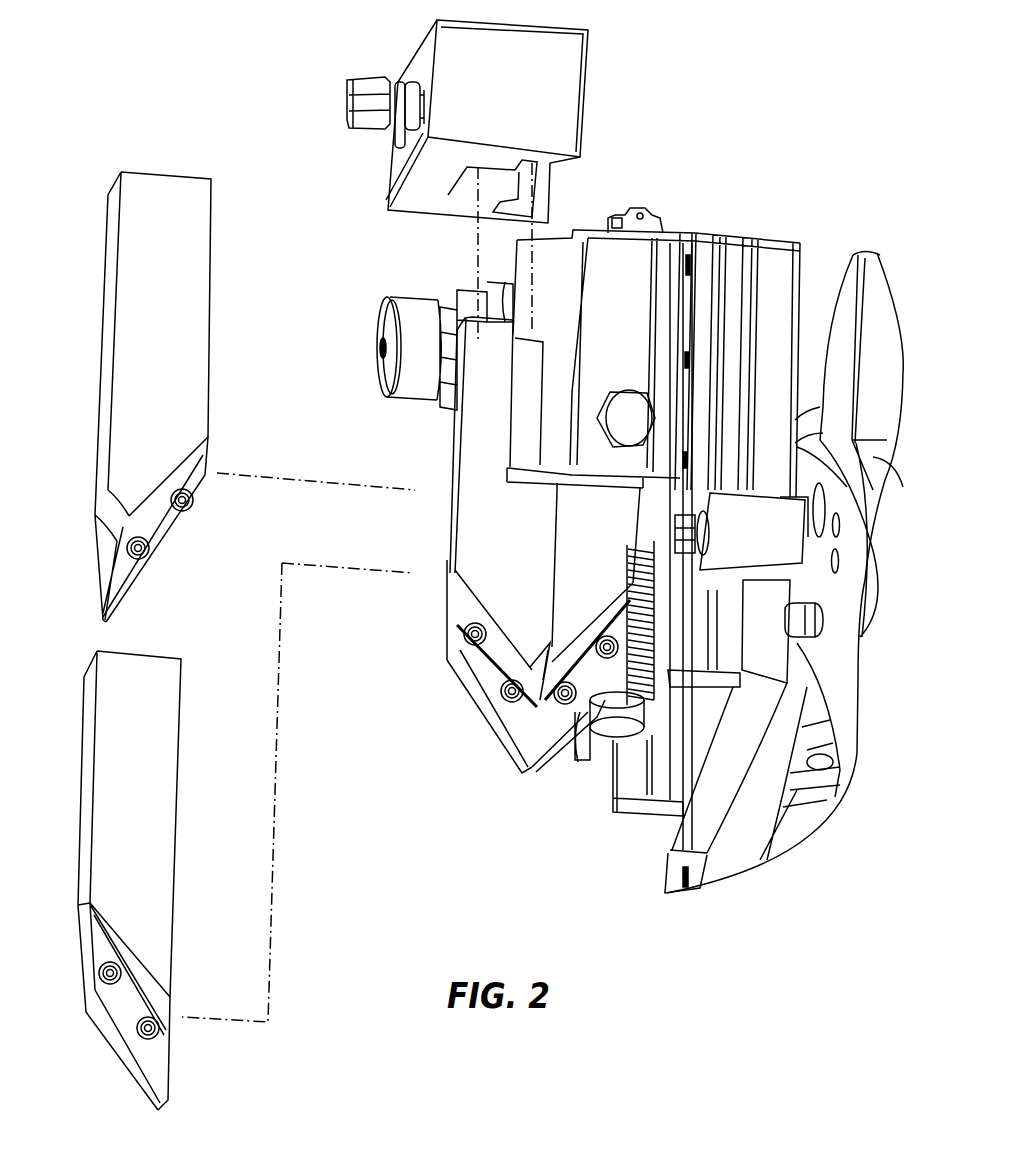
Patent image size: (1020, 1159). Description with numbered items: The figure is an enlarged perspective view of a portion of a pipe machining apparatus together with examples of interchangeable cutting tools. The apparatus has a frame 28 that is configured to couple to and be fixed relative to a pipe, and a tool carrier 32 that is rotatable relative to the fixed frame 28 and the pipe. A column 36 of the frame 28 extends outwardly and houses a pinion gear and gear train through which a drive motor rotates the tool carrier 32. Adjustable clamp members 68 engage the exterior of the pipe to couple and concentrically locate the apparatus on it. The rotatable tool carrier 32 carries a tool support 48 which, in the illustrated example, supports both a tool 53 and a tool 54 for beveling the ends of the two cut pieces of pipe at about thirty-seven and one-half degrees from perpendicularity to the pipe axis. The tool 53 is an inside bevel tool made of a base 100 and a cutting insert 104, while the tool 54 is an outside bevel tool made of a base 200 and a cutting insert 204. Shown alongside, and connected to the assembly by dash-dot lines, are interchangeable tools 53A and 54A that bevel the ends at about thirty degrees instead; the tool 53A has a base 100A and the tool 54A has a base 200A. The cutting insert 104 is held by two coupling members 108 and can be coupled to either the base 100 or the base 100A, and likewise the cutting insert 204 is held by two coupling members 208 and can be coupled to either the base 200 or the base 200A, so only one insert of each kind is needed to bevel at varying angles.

The frame 28 is at (872, 455).
The tool carrier 32 is at (840, 648).
The column 36 is at (871, 246).
The tool support 48 is at (677, 211).
The tool 53 is at (591, 665).
The tool 53A is at (118, 397).
The tool 54 is at (471, 623).
The tool 54A is at (98, 880).
The clamp member 68 is at (798, 820).
The base 100 is at (612, 527).
The base 100A is at (187, 337).
The cutting insert 104 is at (164, 531).
The coupling member 108 is at (572, 640).
The base 200 is at (528, 526).
The base 200A is at (161, 805).
The cutting insert 204 is at (124, 1003).
The coupling member 208 is at (490, 616).